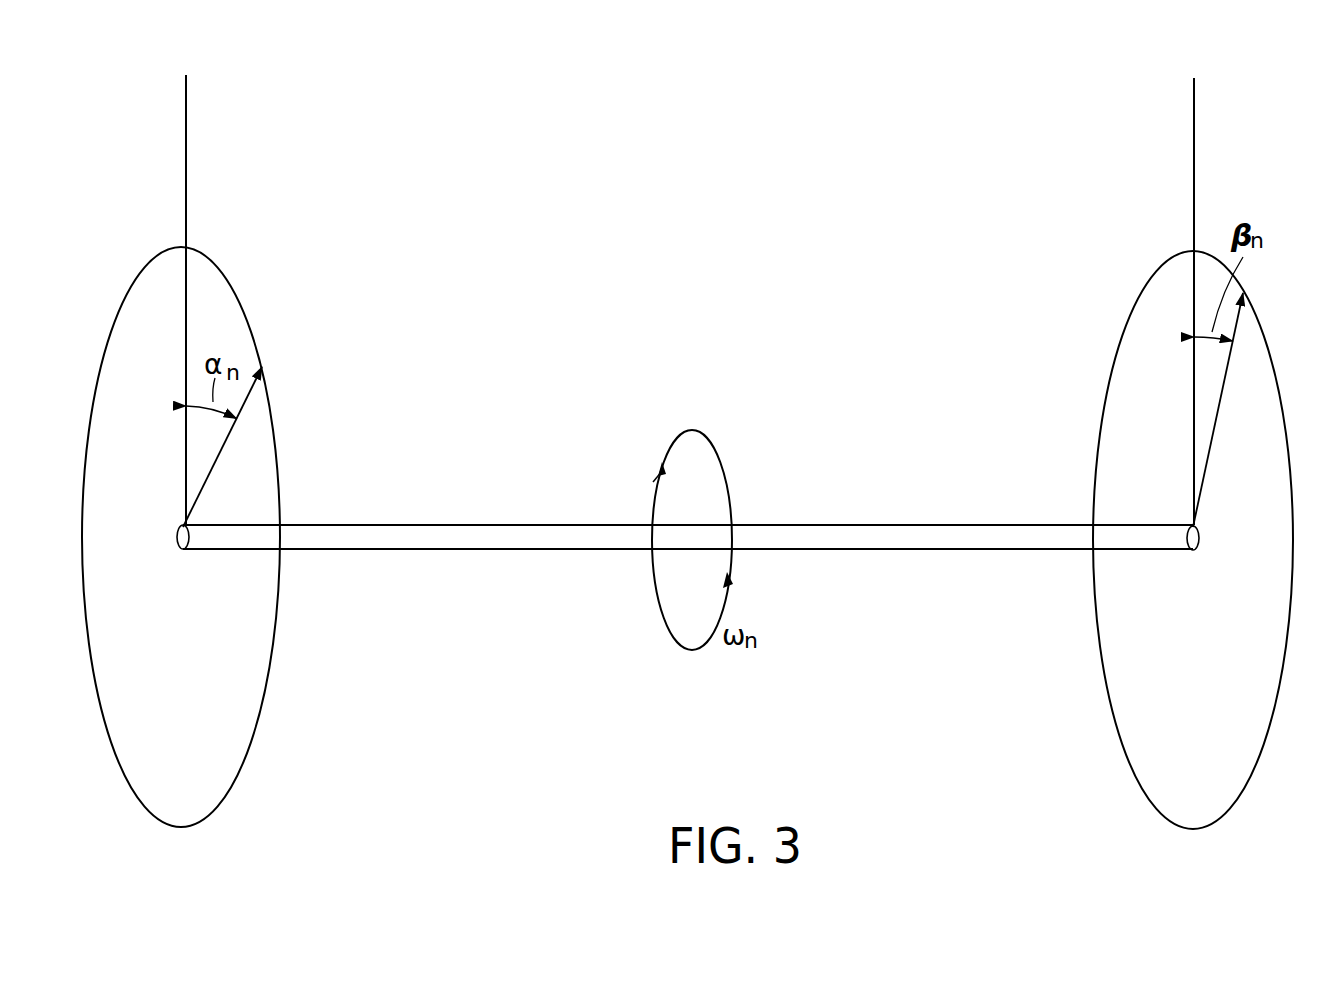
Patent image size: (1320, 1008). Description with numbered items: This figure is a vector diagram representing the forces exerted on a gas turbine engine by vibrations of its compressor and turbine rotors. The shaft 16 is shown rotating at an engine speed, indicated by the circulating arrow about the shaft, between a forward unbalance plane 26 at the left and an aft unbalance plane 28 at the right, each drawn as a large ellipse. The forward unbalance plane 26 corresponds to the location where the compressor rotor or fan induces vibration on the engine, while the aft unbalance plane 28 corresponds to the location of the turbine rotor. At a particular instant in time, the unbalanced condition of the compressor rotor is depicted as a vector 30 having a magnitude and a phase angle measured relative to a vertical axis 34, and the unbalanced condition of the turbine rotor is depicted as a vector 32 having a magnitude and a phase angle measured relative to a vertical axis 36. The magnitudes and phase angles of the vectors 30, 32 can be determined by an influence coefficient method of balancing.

The shaft 16 is at (460, 549).
The forward unbalance plane 26 is at (177, 828).
The aft unbalance plane 28 is at (1152, 808).
The vector 30 is at (250, 397).
The vector 32 is at (1239, 327).
The axis 34 is at (187, 120).
The axis 36 is at (1195, 123).